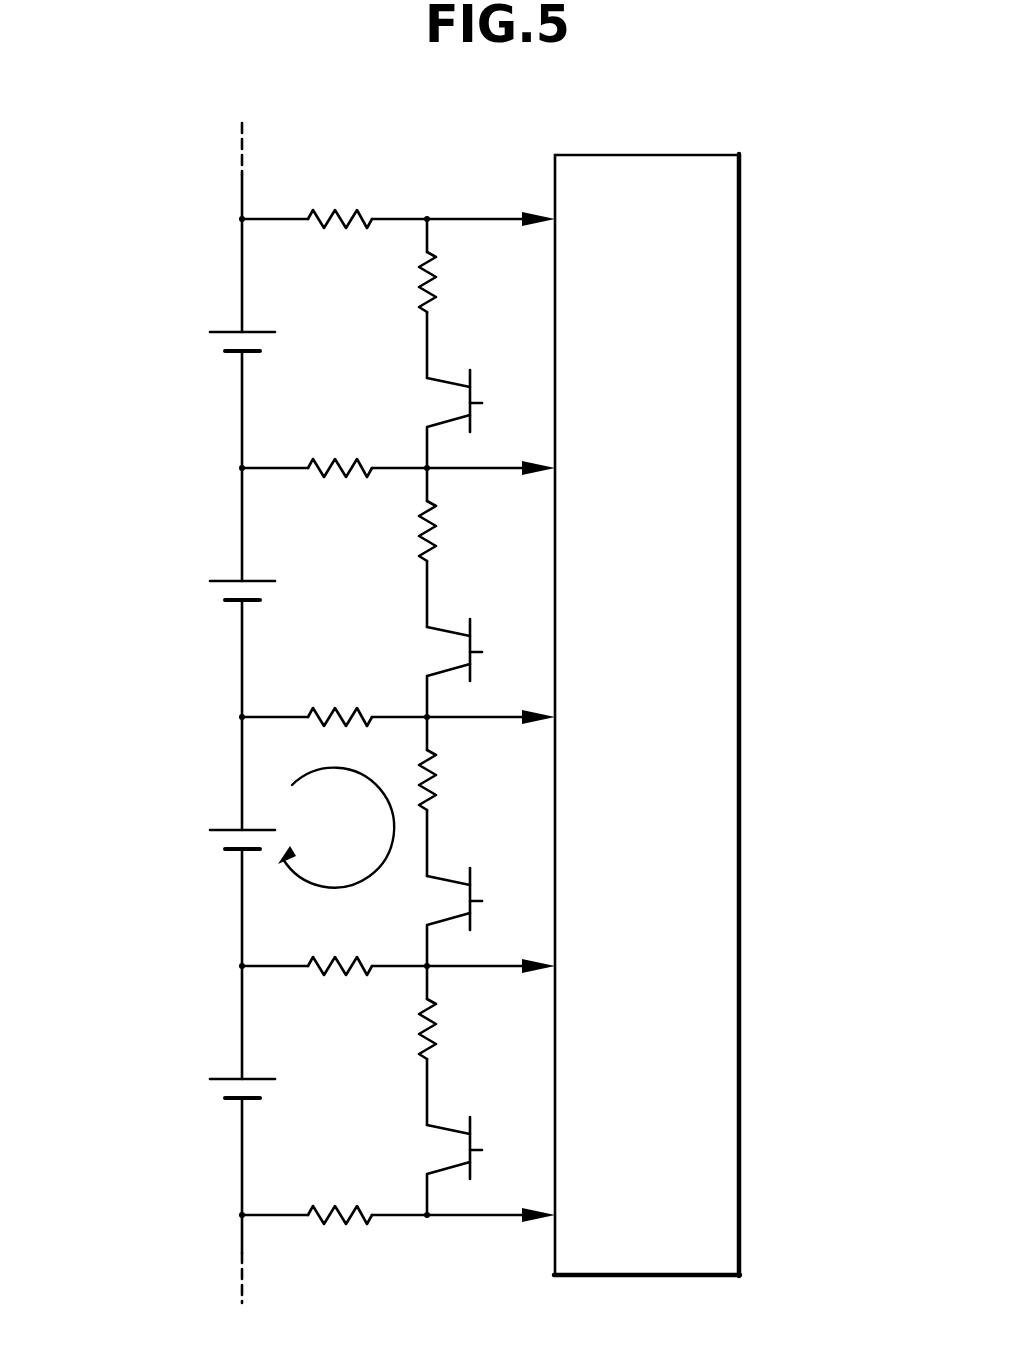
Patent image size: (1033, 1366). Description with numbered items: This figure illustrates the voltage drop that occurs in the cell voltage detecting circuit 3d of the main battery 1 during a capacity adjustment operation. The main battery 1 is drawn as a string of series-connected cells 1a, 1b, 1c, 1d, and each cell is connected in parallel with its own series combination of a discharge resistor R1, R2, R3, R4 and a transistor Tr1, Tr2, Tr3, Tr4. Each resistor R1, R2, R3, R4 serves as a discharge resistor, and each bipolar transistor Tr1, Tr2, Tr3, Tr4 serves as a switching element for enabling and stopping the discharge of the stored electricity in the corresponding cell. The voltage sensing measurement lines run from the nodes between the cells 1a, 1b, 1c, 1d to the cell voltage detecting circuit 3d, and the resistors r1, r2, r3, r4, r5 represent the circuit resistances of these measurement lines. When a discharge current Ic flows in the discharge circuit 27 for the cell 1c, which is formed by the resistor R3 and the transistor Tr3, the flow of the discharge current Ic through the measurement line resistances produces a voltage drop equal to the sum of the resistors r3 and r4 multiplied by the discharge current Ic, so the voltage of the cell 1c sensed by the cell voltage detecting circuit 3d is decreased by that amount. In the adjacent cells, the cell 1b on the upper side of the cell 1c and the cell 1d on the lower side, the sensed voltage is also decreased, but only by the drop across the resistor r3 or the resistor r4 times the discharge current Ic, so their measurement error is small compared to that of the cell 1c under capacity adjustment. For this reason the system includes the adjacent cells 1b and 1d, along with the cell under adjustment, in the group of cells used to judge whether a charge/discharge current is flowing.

The main battery 1 is at (190, 280).
The cell 1a is at (218, 345).
The cell 1b is at (218, 594).
The cell 1c is at (218, 843).
The cell 1d is at (218, 1092).
The cell voltage detecting circuit 3d is at (741, 292).
The discharge circuit 27 is at (460, 841).
The resistor r1 is at (397, 201).
The resistor r2 is at (397, 450).
The resistor r3 is at (397, 699).
The resistor r4 is at (397, 948).
The resistor r5 is at (397, 1197).
The resistor R1 is at (452, 298).
The resistor R2 is at (452, 547).
The resistor R3 is at (452, 796).
The resistor R4 is at (452, 1045).
The transistor Tr1 is at (431, 419).
The transistor Tr2 is at (431, 668).
The transistor Tr3 is at (431, 917).
The transistor Tr4 is at (431, 1166).
The discharge current Ic is at (336, 828).